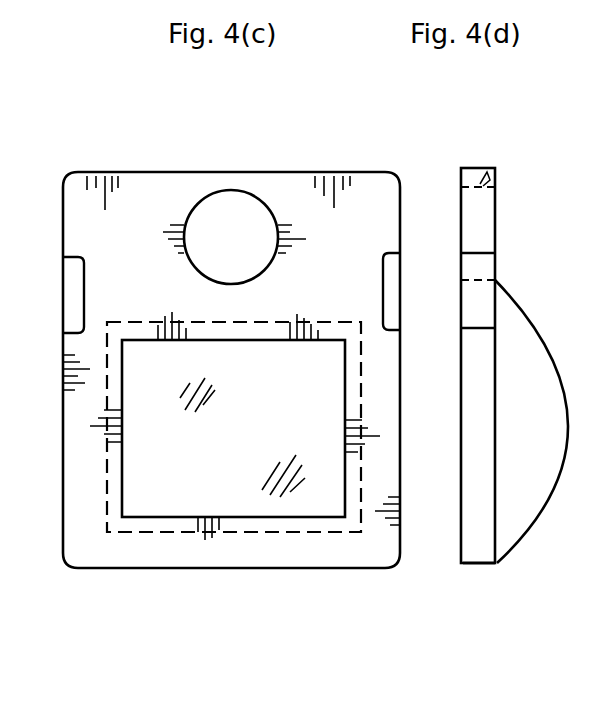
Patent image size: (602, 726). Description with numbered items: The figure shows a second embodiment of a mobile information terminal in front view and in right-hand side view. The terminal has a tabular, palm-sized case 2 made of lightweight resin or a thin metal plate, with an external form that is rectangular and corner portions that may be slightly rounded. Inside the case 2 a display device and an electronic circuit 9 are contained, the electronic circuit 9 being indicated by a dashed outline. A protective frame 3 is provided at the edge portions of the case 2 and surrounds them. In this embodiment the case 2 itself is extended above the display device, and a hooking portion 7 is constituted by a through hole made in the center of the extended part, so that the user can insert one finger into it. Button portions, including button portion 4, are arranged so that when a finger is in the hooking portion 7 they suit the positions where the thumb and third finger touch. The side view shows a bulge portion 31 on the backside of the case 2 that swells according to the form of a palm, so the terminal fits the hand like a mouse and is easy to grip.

The case 2 is at (376, 188).
The protective frame 3 is at (473, 537).
The button portion 4 is at (69, 298).
The hooking portion 7 is at (275, 184).
The electronic circuit 9 is at (170, 535).
The bulge portion 31 is at (511, 507).